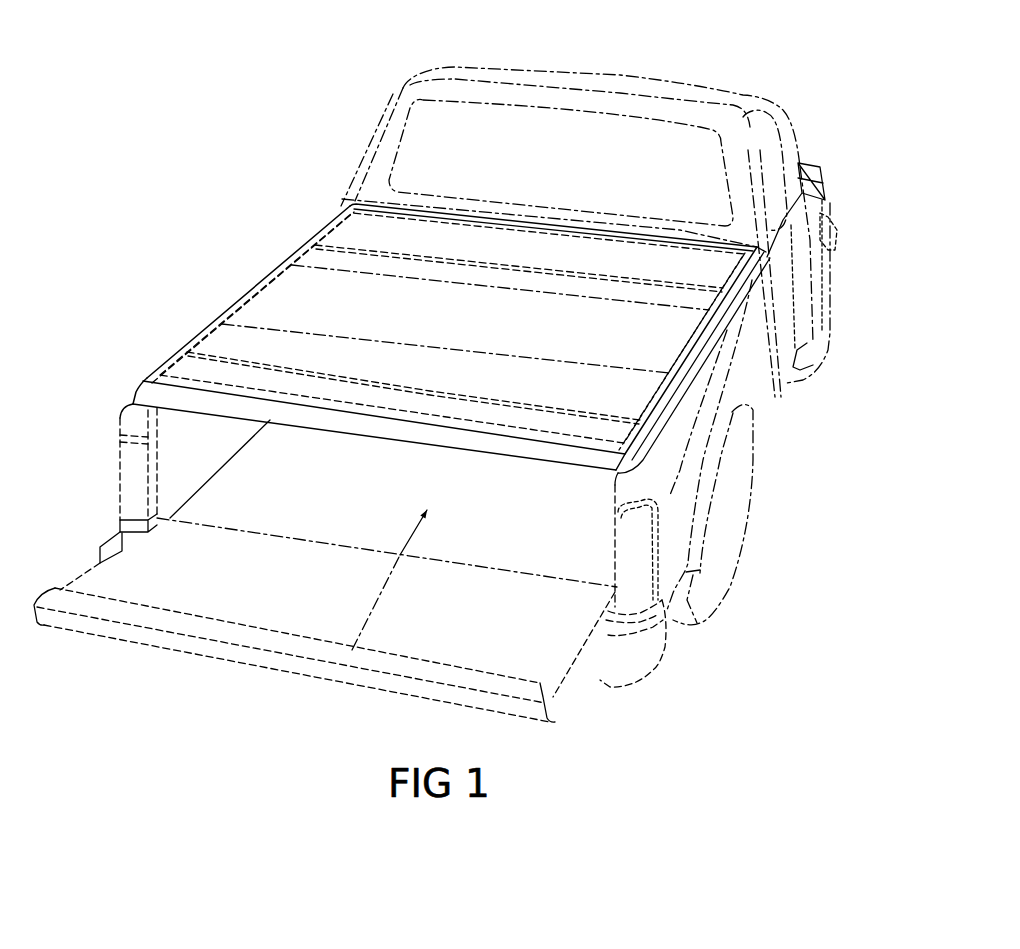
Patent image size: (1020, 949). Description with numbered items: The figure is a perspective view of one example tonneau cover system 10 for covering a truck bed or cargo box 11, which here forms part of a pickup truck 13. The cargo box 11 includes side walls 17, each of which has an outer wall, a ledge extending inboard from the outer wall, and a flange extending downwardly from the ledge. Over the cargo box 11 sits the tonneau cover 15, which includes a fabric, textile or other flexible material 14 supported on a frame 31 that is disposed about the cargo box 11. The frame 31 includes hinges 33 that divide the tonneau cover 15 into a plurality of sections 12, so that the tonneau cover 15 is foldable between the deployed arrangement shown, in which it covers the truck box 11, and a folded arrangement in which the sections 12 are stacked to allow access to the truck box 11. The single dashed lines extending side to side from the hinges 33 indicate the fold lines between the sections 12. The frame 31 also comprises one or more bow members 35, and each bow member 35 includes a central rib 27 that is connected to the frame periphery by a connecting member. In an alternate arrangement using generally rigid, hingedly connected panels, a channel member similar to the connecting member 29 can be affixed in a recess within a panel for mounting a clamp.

The tonneau cover system 10 is at (200, 172).
The truck bed or cargo box 11 is at (370, 667).
The sections 12 is at (332, 216).
The pickup truck 13 is at (407, 82).
The flexible material 14 is at (222, 313).
The tonneau cover 15 is at (338, 197).
The side walls 17 is at (132, 404).
The central rib 27 is at (493, 262).
The connecting member 29 is at (197, 347).
The frame 31 is at (146, 372).
The hinges 33 is at (713, 310).
The bow members 35 is at (526, 264).